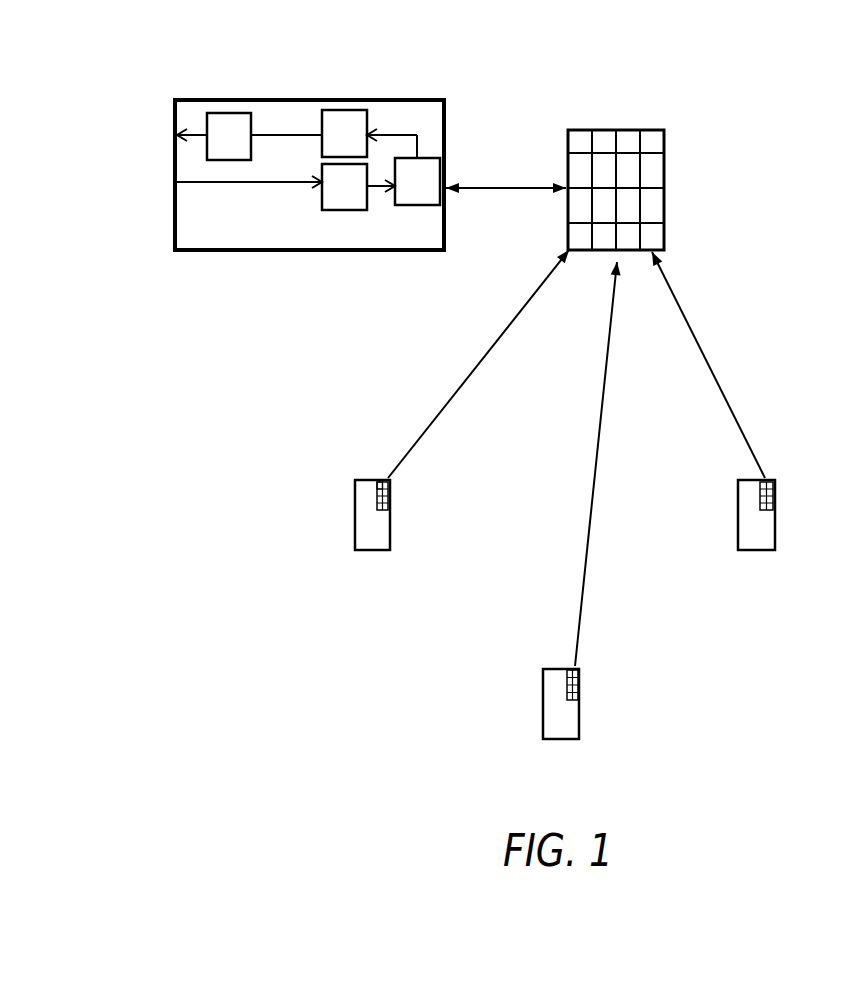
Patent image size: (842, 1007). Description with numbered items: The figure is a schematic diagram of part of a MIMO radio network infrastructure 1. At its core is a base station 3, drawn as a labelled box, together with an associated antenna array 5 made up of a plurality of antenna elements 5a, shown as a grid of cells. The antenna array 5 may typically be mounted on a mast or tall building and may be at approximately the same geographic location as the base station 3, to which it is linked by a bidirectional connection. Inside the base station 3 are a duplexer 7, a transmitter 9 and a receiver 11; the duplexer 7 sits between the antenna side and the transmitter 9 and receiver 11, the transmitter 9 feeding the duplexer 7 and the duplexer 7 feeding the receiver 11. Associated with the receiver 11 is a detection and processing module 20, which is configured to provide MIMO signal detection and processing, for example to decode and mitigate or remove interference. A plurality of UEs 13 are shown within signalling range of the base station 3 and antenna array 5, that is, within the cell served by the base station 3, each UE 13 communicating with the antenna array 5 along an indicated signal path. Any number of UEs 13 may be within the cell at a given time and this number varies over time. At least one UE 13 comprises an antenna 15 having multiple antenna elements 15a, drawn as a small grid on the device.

The MIMO radio network infrastructure 1 is at (743, 82).
The base station 3 is at (202, 238).
The antenna array 5 is at (664, 147).
The antenna element 5a is at (578, 135).
The duplexer 7 is at (430, 200).
The transmitter 9 is at (343, 201).
The receiver 11 is at (327, 154).
The UE 13 is at (355, 509).
The antenna 15 is at (390, 510).
The antenna element 15a is at (390, 487).
The detection and processing module 20 is at (231, 112).